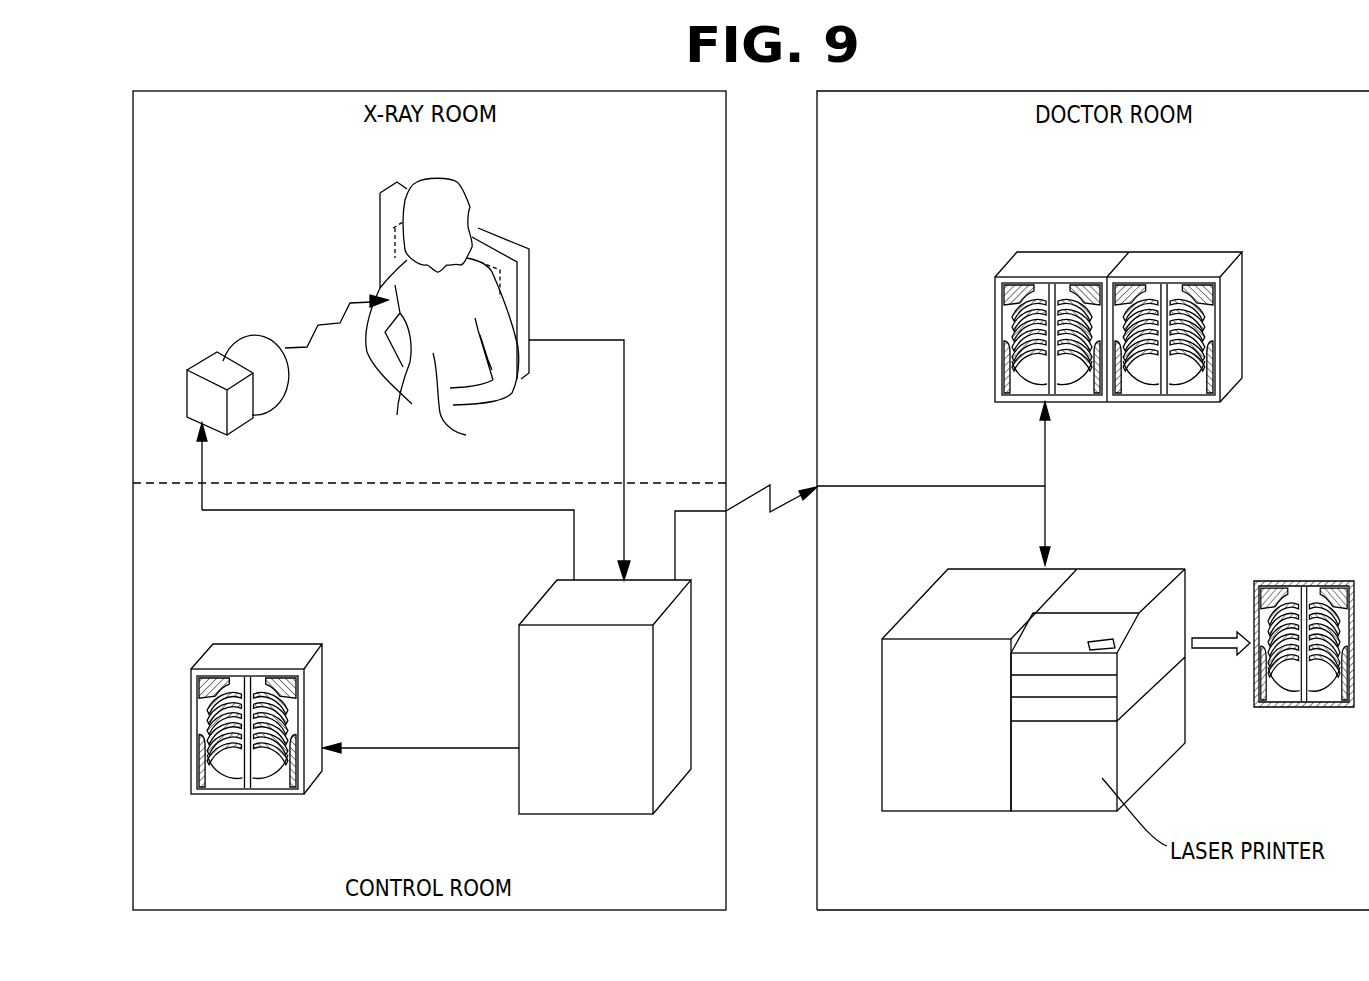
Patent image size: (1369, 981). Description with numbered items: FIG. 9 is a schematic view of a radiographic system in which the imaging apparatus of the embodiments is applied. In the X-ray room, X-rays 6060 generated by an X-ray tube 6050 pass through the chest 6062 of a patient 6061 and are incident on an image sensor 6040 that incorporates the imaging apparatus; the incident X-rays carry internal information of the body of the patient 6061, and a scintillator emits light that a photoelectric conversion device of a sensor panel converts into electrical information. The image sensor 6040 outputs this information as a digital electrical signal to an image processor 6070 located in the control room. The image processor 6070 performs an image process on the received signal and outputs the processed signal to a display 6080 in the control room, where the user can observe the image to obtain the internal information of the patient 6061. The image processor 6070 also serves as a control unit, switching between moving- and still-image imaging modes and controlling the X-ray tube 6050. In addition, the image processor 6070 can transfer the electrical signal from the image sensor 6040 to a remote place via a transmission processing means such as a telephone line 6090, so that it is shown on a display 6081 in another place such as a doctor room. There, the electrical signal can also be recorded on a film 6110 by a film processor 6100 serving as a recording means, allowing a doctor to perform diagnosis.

The image sensor 6040 is at (382, 233).
The X-ray tube 6050 is at (190, 362).
The X-rays 6060 is at (331, 325).
The patient 6061 is at (462, 183).
The chest 6062 is at (466, 435).
The image processor 6070 is at (530, 780).
The display 6080 is at (243, 653).
The display 6081 is at (1037, 251).
The telephone line 6090 is at (753, 490).
The film processor 6100 is at (904, 811).
The film 6110 is at (1280, 710).